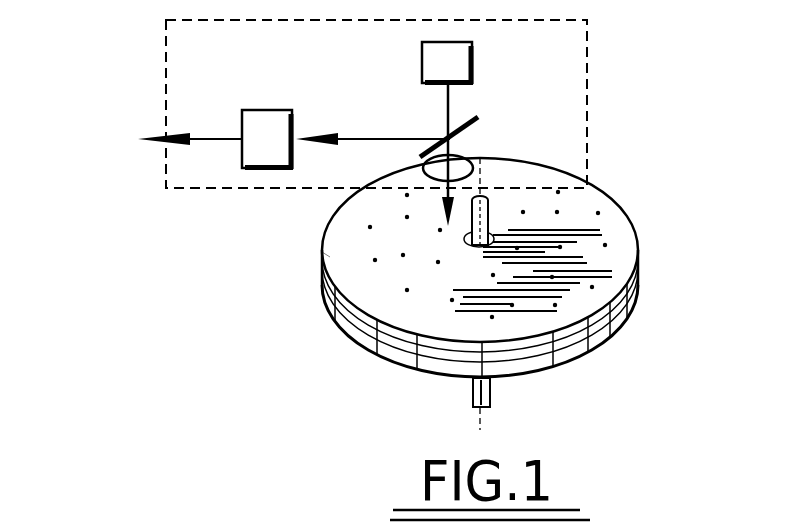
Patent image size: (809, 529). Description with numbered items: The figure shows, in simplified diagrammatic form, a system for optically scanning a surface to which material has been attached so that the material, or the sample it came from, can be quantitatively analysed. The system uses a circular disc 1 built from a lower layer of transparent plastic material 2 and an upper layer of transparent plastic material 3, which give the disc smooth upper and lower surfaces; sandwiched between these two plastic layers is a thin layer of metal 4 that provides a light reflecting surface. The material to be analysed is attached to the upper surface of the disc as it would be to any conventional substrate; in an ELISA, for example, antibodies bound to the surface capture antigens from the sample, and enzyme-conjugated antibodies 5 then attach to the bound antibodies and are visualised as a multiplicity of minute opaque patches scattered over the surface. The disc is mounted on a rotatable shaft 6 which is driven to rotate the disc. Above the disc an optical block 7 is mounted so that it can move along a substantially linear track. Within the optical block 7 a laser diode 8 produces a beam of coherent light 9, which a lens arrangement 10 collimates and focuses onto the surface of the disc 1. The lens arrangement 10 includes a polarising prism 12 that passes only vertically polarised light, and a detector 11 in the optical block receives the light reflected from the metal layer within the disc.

The circular disc 1 is at (638, 230).
The lower layer of transparent plastic material 2 is at (597, 278).
The upper layer of transparent plastic material 3 is at (322, 252).
The thin layer of metal 4 is at (323, 295).
The enzyme-conjugated antibodies 5 is at (557, 212).
The rotatable shaft 6 is at (466, 392).
The optical block 7 is at (163, 100).
The laser diode 8 is at (442, 60).
The beam of coherent light 9 is at (450, 103).
The lens arrangement 10 is at (390, 163).
The detector 11 is at (262, 135).
The polarising prism 12 is at (473, 128).